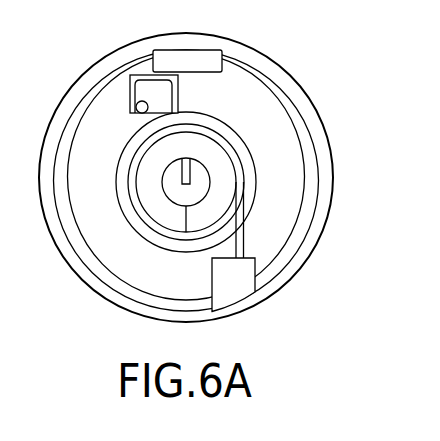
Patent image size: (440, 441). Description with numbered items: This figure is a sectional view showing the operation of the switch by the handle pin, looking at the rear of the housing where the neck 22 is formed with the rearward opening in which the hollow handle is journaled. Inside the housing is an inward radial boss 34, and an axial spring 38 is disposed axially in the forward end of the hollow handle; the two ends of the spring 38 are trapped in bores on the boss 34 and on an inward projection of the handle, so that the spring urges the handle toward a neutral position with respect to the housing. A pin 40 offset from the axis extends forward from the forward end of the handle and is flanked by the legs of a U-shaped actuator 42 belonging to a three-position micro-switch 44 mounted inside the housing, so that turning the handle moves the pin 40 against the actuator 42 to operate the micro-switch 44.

The neck 22 is at (284, 72).
The inward radial boss 34 is at (255, 276).
The axial spring 38 is at (242, 170).
The pin 40 is at (136, 105).
The U-shaped actuator 42 is at (178, 92).
The three-position micro-switch 44 is at (207, 52).